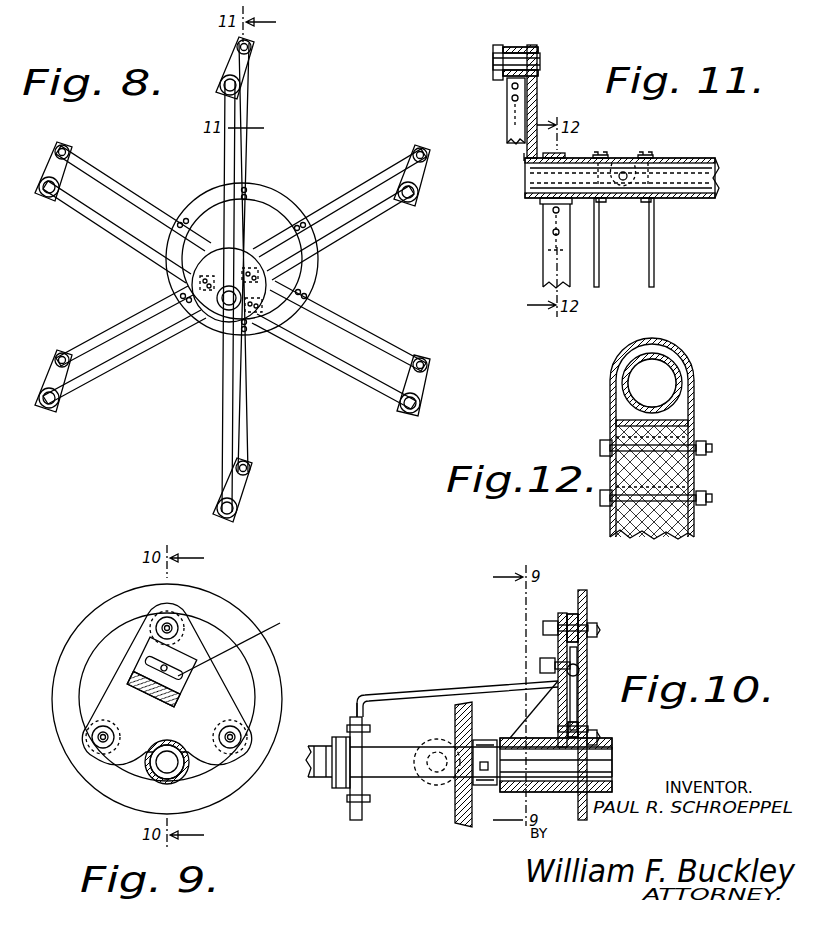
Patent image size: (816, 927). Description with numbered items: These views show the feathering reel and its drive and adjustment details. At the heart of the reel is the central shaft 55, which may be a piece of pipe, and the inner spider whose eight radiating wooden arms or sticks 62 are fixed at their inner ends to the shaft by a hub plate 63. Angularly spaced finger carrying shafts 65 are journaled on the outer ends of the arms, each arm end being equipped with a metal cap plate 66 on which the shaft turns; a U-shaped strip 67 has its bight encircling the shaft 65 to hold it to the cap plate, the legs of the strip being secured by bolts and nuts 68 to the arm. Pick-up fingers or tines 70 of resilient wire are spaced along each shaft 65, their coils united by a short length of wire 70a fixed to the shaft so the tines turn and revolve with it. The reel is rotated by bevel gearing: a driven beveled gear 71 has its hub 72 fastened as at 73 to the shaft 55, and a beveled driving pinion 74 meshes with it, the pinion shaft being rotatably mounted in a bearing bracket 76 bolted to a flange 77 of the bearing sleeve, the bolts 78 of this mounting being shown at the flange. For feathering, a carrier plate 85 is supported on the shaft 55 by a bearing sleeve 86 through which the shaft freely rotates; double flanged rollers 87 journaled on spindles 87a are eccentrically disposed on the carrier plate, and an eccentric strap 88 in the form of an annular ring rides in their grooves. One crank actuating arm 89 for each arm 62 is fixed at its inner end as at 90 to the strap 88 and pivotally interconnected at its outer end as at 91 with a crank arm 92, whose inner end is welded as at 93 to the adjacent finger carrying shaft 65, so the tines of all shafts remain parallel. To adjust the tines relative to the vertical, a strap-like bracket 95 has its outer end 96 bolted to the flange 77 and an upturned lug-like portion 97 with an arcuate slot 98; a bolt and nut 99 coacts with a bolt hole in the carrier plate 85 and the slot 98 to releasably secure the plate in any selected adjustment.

In FIG. 8, the central shaft 55 is at (233, 290).
In FIG. 9, the central shaft 55 is at (150, 768).
In FIG. 10, the central shaft 55 is at (612, 760).
In FIG. 8, the radiating arms 62 is at (222, 154).
In FIG. 11, the radiating arms 62 is at (543, 262).
In FIG. 12, the radiating arms 62 is at (690, 540).
In FIG. 8, the hub plate 63 is at (262, 304).
In FIG. 8, the finger carrying shaft 65 is at (241, 86).
In FIG. 11, the finger carrying shaft 65 is at (700, 164).
In FIG. 12, the finger carrying shaft 65 is at (668, 357).
In FIG. 11, the metal cap plate 66 is at (545, 204).
In FIG. 12, the metal cap plate 66 is at (688, 426).
In FIG. 11, the U-shaped strip 67 is at (560, 152).
In FIG. 12, the U-shaped strip 67 is at (694, 400).
In FIG. 11, the bolts and nuts 68 is at (553, 211).
In FIG. 12, the bolts and nuts 68 is at (708, 450).
In FIG. 11, the pick-up fingers or tines 70 is at (654, 258).
In FIG. 11, the short length of wire 70a is at (630, 152).
In FIG. 10, the driven beveled gear 71 is at (470, 827).
In FIG. 10, the hub 72 is at (485, 740).
In FIG. 10, the fastening 73 is at (484, 770).
In FIG. 10, the beveled driving pinion 74 is at (427, 740).
In FIG. 10, the bearing bracket 76 is at (356, 820).
In FIG. 10, the flange 77 is at (340, 788).
In FIG. 10, the bolts 78 is at (347, 728).
In FIG. 9, the carrier plate 85 is at (205, 700).
In FIG. 10, the carrier plate 85 is at (567, 697).
In FIG. 9, the bearing sleeve 86 is at (185, 768).
In FIG. 10, the bearing sleeve 86 is at (535, 792).
In FIG. 9, the double flanged rollers 87 is at (178, 620).
In FIG. 10, the double flanged rollers 87 is at (597, 622).
In FIG. 9, the spindles 87a is at (158, 620).
In FIG. 10, the spindles 87a is at (600, 630).
In FIG. 8, the eccentric strap 88 is at (310, 276).
In FIG. 9, the eccentric strap 88 is at (250, 620).
In FIG. 10, the eccentric strap 88 is at (587, 598).
In FIG. 8, the crank actuating arm 89 is at (250, 146).
In FIG. 8, the fixing point 90 is at (296, 226).
In FIG. 8, the pivotal interconnection 91 is at (251, 46).
In FIG. 11, the pivotal interconnection 91 is at (515, 52).
In FIG. 8, the crank arm 92 is at (226, 62).
In FIG. 11, the crank arm 92 is at (537, 100).
In FIG. 11, the welded connection 93 is at (524, 158).
In FIG. 10, the strap-like bracket 95 is at (480, 690).
In FIG. 10, the outer end 96 is at (358, 700).
In FIG. 9, the lug-like portion 97 is at (240, 645).
In FIG. 10, the lug-like portion 97 is at (548, 658).
In FIG. 9, the arcuate slot 98 is at (130, 676).
In FIG. 9, the bolt and nut 99 is at (150, 663).
In FIG. 10, the bolt and nut 99 is at (579, 668).